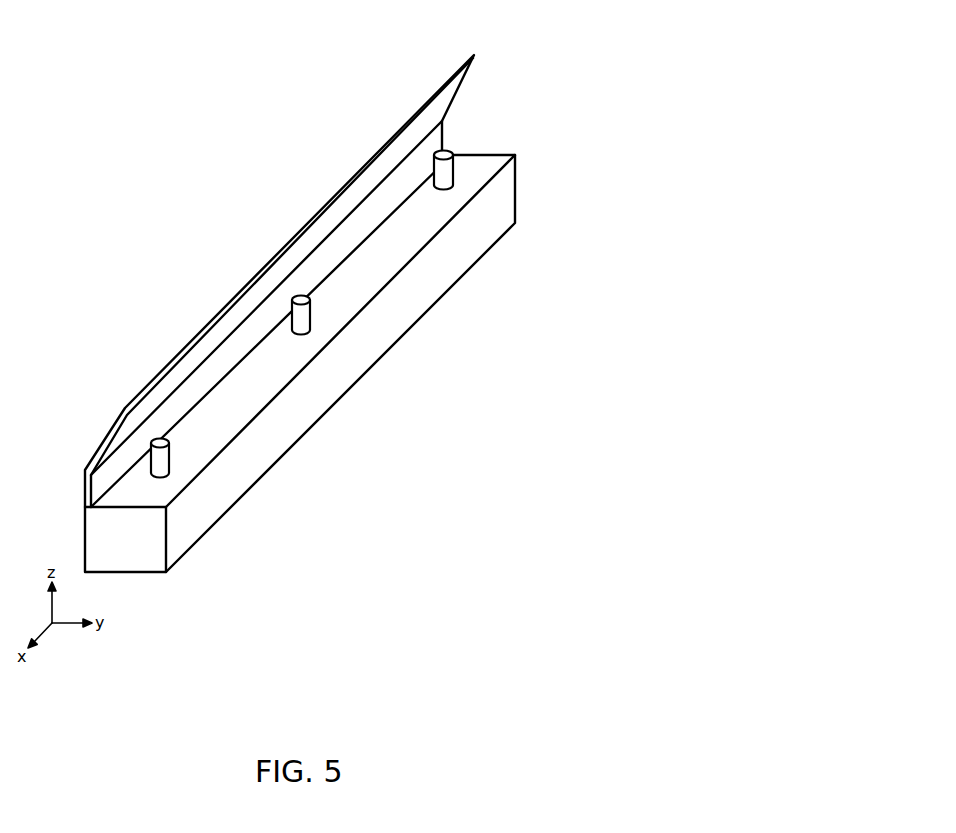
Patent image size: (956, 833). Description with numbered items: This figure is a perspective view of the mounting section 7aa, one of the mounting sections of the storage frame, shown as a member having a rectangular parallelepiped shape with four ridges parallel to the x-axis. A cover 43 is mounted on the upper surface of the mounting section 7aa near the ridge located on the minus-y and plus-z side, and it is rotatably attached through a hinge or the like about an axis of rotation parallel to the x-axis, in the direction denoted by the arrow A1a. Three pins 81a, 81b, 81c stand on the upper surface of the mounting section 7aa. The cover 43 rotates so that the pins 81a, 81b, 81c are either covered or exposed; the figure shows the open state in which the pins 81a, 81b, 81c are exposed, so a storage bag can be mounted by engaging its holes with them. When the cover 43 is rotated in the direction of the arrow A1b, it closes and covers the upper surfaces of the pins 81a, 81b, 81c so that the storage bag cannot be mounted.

The mounting section 7aa is at (140, 555).
The cover 43 is at (257, 272).
The pin 81a is at (453, 172).
The pin 81b is at (311, 313).
The pin 81c is at (169, 455).
The arrow A1a is at (478, 80).
The arrow A1b is at (543, 22).